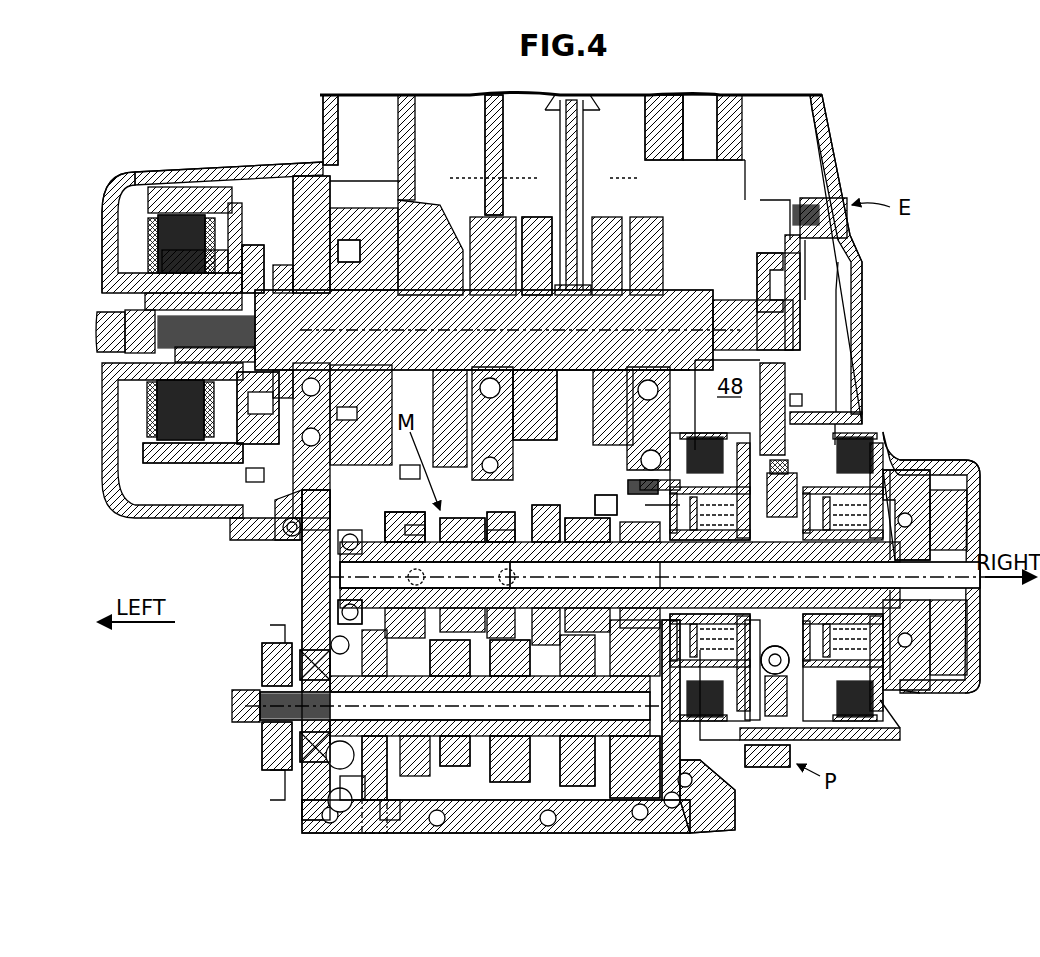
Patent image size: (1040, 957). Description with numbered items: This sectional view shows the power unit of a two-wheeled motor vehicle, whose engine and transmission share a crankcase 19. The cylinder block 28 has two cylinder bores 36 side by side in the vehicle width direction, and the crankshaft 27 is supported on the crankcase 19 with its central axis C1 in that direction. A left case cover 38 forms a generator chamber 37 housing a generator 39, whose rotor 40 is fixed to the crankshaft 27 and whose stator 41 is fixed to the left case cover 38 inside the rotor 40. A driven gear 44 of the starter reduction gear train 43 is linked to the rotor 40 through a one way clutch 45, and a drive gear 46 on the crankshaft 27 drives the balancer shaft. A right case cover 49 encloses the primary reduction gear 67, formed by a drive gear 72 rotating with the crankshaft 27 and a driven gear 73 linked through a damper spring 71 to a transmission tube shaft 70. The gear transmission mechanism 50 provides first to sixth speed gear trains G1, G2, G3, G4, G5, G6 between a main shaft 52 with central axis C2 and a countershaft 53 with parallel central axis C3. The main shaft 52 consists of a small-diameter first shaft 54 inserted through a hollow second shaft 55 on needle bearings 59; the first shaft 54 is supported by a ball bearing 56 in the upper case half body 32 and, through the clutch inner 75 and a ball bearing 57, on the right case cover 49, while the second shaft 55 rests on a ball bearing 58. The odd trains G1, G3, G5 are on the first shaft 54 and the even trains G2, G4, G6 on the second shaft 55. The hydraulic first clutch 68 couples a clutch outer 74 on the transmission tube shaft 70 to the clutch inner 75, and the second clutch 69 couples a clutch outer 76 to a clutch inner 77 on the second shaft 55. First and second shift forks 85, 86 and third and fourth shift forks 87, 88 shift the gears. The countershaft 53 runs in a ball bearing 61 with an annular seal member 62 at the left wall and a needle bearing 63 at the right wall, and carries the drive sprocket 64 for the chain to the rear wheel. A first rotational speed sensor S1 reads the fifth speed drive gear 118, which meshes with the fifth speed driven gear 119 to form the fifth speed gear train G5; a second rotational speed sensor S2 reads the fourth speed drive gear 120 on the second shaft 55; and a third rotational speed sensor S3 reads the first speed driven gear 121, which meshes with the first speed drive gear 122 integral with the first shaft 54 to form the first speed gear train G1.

The cylinder block 28 is at (323, 112).
The cylinder bore 36 is at (485, 125).
The left case cover 38 is at (181, 172).
The generator chamber 37 is at (243, 182).
The stator 41 is at (170, 230).
The one way clutch 45 is at (258, 245).
The drive gear 46 is at (352, 240).
The central axis C1 is at (536, 265).
The crankshaft 27 is at (668, 300).
The drive gear 72 is at (760, 262).
The right case cover 49 is at (862, 378).
The primary reduction gear 67 is at (792, 400).
The fourth speed drive gear 120 is at (536, 428).
The fifth speed drive gear 118 is at (410, 472).
The sixth speed gear train G6 is at (568, 490).
The ball bearing 58 is at (660, 500).
The transmission tube shaft 70 is at (745, 470).
The clutch outer 74 is at (883, 434).
The clutch inner 75 is at (905, 500).
The ball bearing 57 is at (937, 500).
The driven gear 44 is at (264, 476).
The central axis C2 is at (402, 516).
The first shaft 54 is at (470, 528).
The needle bearing 59 is at (515, 540).
The main shaft 52 is at (546, 525).
The second shaft 55 is at (600, 530).
The fifth speed gear train G5 is at (398, 513).
The first rotational speed sensor S1 is at (415, 526).
The second rotational speed sensor S2 is at (505, 540).
The first speed drive gear 122 is at (330, 506).
The rotor 40 is at (166, 478).
The generator 39 is at (180, 482).
The reduction gear train 43 is at (232, 488).
The upper case half body 32 is at (305, 556).
The crankcase 19 is at (300, 578).
The first shift fork 85 is at (505, 577).
The second shift fork 86 is at (580, 577).
The ball bearing 56 is at (345, 610).
The annular seal member 62 is at (305, 656).
The countershaft 53 is at (268, 666).
The central axis C3 is at (450, 650).
The fourth shift fork 88 is at (546, 680).
The third shift fork 87 is at (445, 706).
The drive sprocket 64 is at (262, 771).
The ball bearing 61 is at (322, 755).
The first speed driven gear 121 is at (352, 790).
The first speed gear train G1 is at (360, 812).
The third rotational speed sensor S3 is at (370, 856).
The third speed gear train G3 is at (450, 794).
The fifth speed driven gear 119 is at (395, 820).
The gear transmission mechanism 50 is at (511, 795).
The fourth speed gear train G4 is at (524, 786).
The second speed gear train G2 is at (636, 818).
The clutch inner 77 is at (676, 640).
The damper spring 71 is at (765, 680).
The clutch outer 76 is at (696, 706).
The second clutch 69 is at (757, 690).
The needle bearing 63 is at (690, 790).
The driven gear 73 is at (792, 745).
The first clutch 68 is at (884, 702).